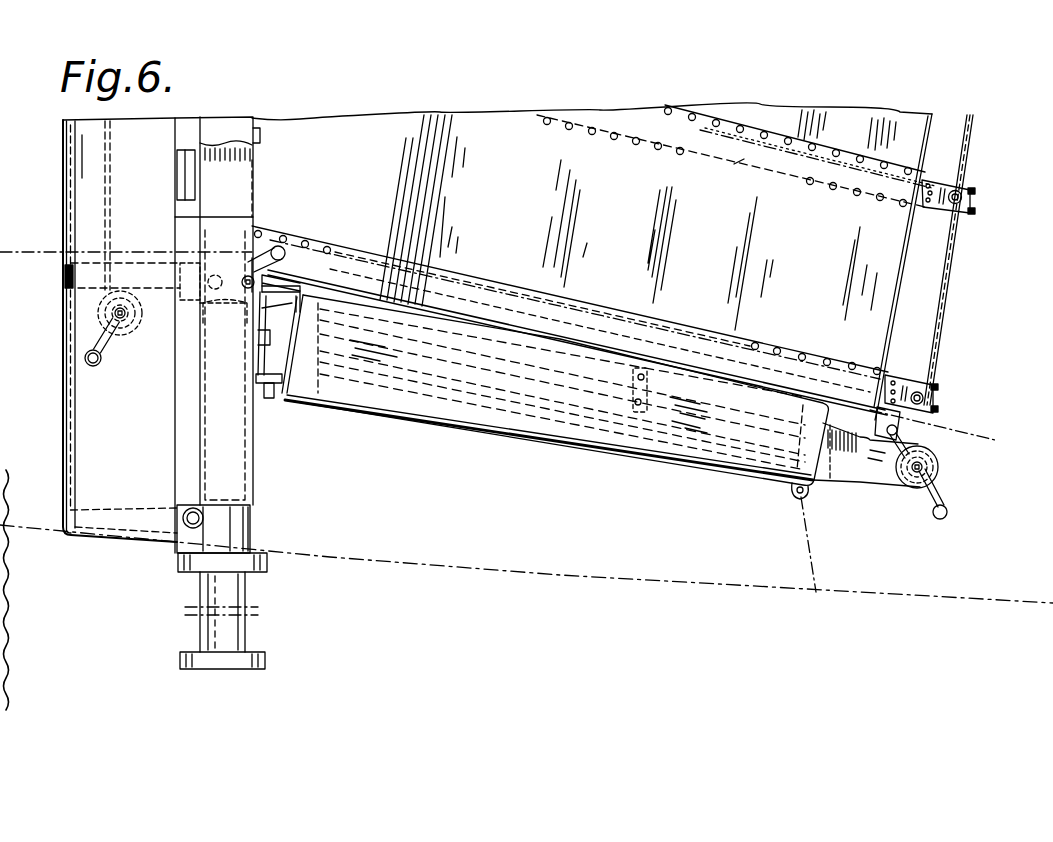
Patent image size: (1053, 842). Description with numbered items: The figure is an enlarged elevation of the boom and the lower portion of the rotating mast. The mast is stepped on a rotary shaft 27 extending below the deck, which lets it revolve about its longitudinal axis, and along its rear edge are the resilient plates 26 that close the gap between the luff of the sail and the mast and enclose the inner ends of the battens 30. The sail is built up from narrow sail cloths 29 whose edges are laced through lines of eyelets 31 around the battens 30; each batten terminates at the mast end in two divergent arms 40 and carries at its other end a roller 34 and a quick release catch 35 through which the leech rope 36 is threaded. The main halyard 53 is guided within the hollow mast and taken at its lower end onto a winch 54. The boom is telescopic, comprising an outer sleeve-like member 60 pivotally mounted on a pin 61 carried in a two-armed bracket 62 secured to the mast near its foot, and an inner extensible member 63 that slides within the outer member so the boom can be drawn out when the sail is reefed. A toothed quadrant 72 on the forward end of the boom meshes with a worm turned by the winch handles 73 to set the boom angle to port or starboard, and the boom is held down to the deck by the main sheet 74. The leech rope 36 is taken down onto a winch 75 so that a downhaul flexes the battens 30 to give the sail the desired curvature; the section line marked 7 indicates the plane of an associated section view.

The section line 7- 7 is at (38, 232).
The plates 26 is at (250, 217).
The rotary shaft 27 is at (246, 625).
The sail cloths 29 is at (900, 113).
The battens 30 is at (60, 452).
The eyelets 31 is at (808, 181).
The roller 34 is at (970, 184).
The quick release catch 35 is at (975, 196).
The leech rope 36 is at (958, 241).
The divergent arms 40 is at (738, 160).
The main halyard 53 is at (107, 171).
The winch 54 is at (123, 322).
The outer sleeve-like member 60 is at (698, 463).
The pin 61 is at (283, 348).
The two-armed bracket 62 is at (262, 338).
The inner extensible member 63 is at (830, 474).
The toothed quadrant 72 is at (262, 290).
The winch handles 73 is at (281, 249).
The main sheet 74 is at (811, 547).
The winch 75 is at (925, 478).